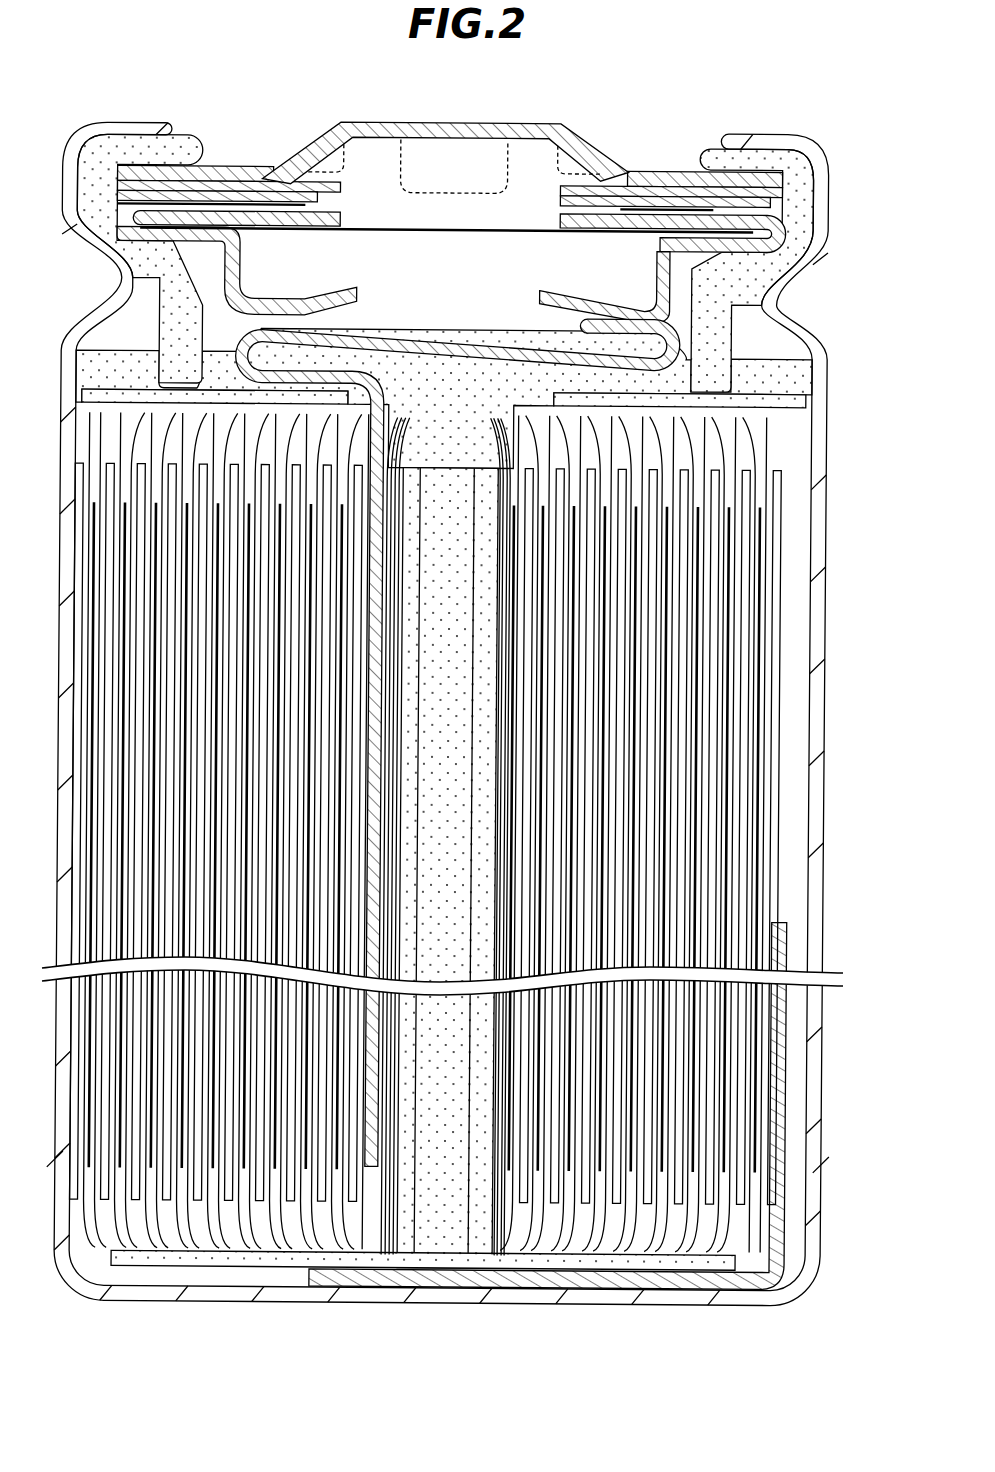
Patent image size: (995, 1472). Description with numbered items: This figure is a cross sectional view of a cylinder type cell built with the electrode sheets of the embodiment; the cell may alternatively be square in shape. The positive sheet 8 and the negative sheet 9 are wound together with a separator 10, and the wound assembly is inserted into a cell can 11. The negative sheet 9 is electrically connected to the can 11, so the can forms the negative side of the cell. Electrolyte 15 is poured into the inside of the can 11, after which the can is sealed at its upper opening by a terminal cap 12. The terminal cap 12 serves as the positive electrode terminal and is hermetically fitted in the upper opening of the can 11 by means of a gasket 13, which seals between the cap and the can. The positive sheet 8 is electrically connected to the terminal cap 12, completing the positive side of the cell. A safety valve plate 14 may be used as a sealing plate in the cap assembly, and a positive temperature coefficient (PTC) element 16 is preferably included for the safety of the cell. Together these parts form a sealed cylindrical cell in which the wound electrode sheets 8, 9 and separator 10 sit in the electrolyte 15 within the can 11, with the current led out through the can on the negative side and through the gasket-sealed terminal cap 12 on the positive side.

The positive sheet 8 is at (782, 513).
The negative sheet 9 is at (781, 564).
The separator 10 is at (768, 610).
The cell can 11 is at (824, 673).
The terminal cap 12 is at (562, 131).
The gasket 13 is at (806, 210).
The safety valve plate 14 is at (465, 233).
The electrolyte 15 is at (812, 382).
The positive temperature coefficient (PTC) element 16 is at (786, 192).